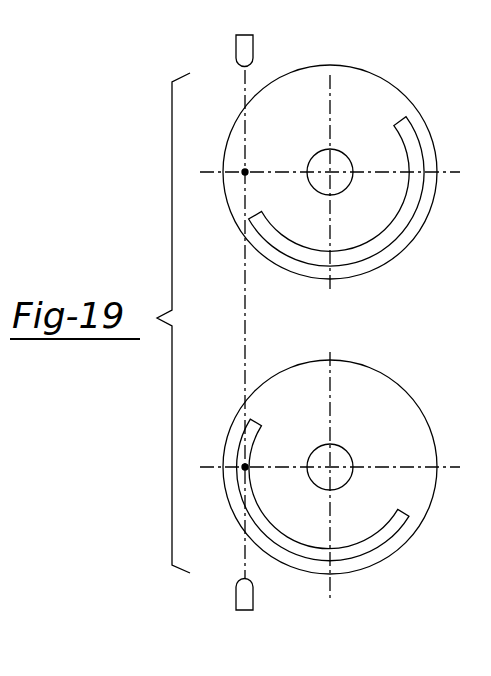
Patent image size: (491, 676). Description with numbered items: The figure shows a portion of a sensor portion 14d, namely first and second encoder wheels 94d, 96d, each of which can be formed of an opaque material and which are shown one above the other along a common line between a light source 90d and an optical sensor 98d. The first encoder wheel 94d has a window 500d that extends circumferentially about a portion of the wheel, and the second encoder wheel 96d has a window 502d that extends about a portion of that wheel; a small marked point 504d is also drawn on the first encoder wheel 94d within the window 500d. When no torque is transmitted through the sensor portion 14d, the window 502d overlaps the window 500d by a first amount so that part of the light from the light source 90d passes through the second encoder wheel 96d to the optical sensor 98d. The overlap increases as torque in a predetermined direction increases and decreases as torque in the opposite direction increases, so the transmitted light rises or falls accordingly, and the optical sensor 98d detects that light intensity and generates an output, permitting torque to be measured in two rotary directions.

The sensor portion 14d is at (152, 407).
The light source 90d is at (238, 52).
The first encoder wheel 94d is at (400, 67).
The second encoder wheel 96d is at (409, 355).
The optical sensor 98d is at (238, 598).
The window 500d is at (315, 88).
The window 502d is at (352, 552).
The pin 504d is at (235, 193).